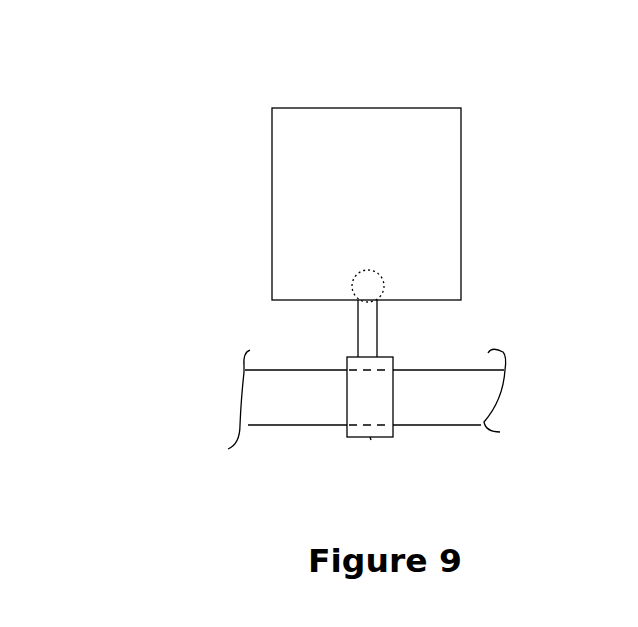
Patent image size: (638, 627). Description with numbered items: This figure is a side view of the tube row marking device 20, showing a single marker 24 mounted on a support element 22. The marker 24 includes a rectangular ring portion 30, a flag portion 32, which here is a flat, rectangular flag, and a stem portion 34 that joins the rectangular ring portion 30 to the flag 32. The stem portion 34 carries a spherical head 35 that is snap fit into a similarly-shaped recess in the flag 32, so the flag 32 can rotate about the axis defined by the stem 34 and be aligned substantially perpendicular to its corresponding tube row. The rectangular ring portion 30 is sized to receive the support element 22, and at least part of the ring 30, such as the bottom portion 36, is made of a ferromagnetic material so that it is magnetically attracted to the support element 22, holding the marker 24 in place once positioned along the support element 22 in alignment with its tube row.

The tube row marking device 20 is at (215, 132).
The support element 22 is at (285, 398).
The marker 24 is at (239, 270).
The rectangular ring portion 30 is at (393, 360).
The flag portion 32 is at (428, 142).
The stem portion 34 is at (358, 330).
The spherical head 35 is at (375, 262).
The bottom portion 36 is at (369, 439).